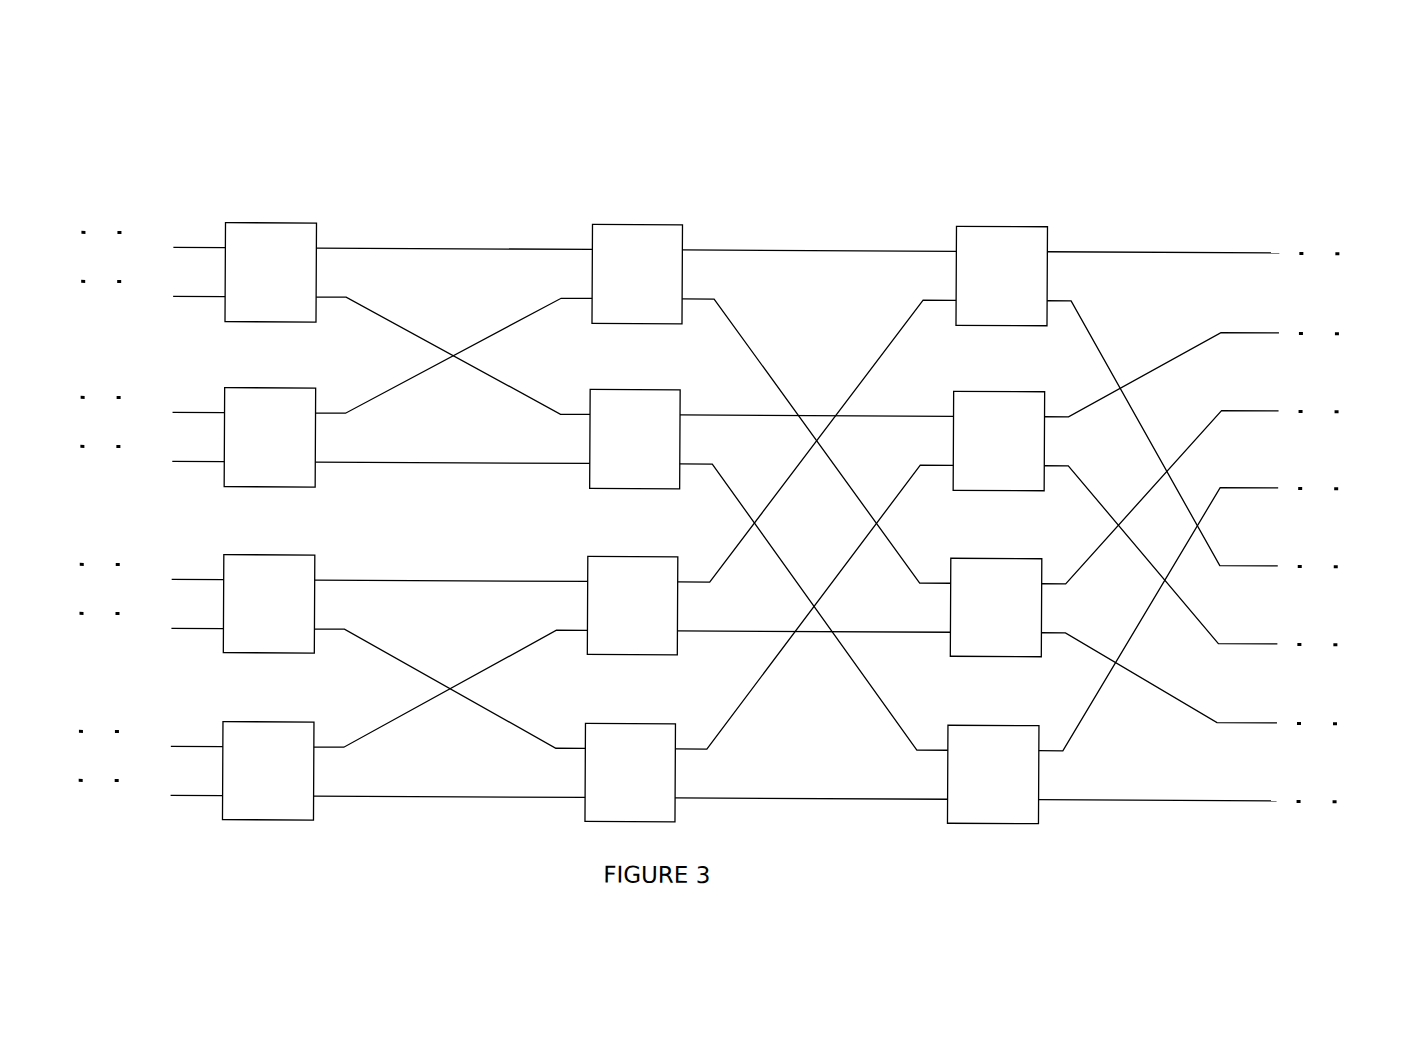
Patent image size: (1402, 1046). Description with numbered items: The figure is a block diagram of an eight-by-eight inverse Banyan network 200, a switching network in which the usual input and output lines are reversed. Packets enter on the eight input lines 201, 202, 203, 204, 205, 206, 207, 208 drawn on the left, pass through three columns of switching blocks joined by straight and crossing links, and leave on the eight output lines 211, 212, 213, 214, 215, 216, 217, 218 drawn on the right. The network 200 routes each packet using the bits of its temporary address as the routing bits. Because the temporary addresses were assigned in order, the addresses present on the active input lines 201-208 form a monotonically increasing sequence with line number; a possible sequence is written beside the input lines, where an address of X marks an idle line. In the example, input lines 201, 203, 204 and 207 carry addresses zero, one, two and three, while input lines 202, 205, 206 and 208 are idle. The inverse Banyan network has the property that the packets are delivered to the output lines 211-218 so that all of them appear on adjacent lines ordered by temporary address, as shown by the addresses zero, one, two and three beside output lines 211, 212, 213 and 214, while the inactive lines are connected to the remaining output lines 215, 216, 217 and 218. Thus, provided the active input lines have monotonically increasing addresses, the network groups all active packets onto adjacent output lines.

The inverse Banyan network 200 is at (1145, 152).
The input line 201 is at (190, 234).
The input line 202 is at (190, 283).
The input line 203 is at (190, 399).
The input line 204 is at (189, 448).
The input line 205 is at (189, 566).
The input line 206 is at (188, 615).
The input line 207 is at (188, 733).
The input line 208 is at (188, 782).
The output line 211 is at (1163, 236).
The output line 212 is at (1162, 359).
The output line 213 is at (1160, 481).
The output line 214 is at (1158, 603).
The output line 215 is at (1162, 433).
The output line 216 is at (1160, 555).
The output line 217 is at (1159, 678).
The output line 218 is at (1158, 784).